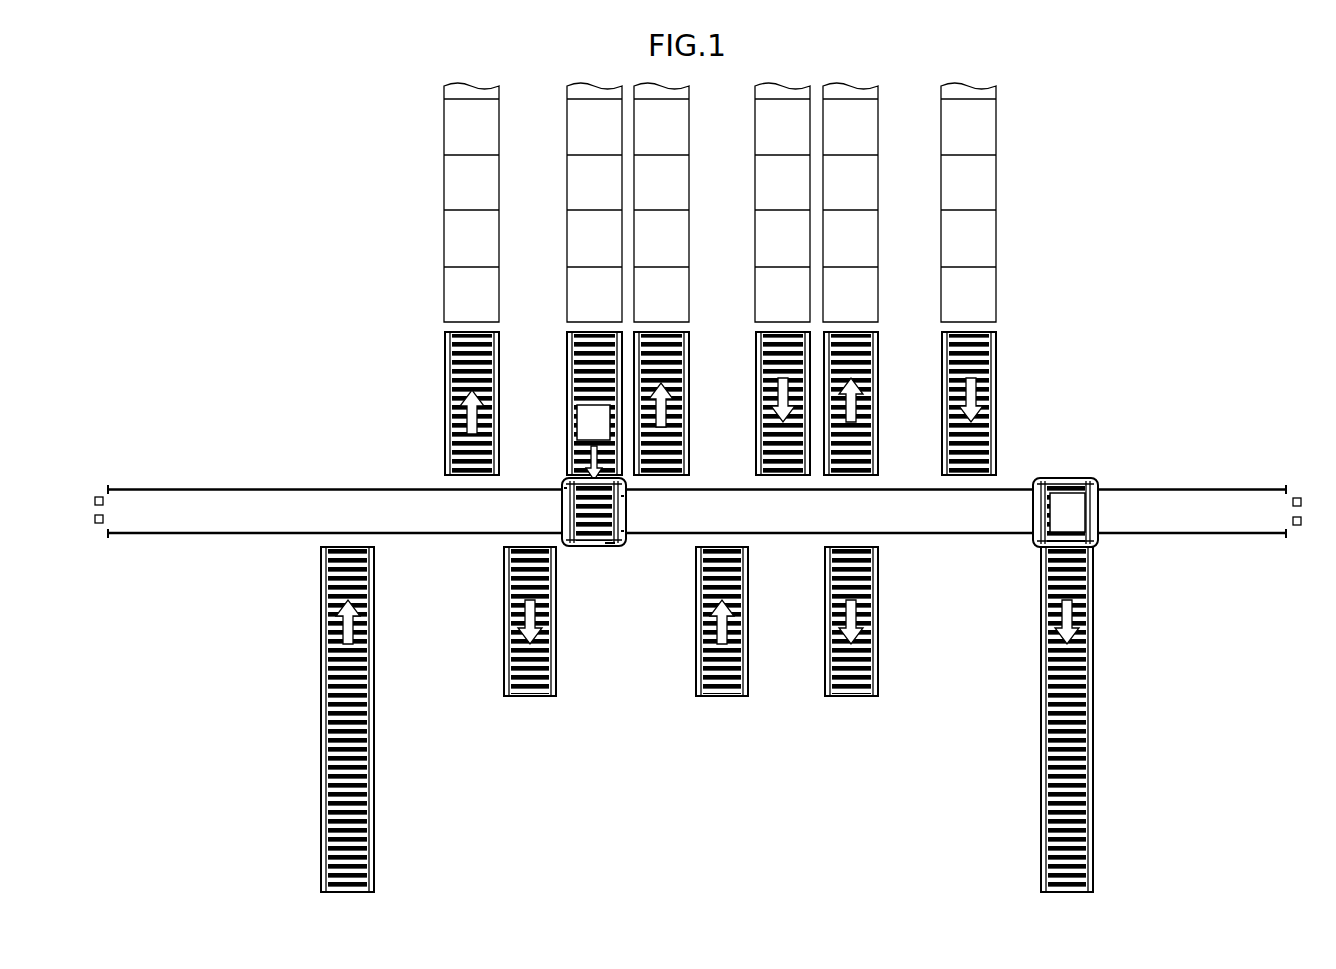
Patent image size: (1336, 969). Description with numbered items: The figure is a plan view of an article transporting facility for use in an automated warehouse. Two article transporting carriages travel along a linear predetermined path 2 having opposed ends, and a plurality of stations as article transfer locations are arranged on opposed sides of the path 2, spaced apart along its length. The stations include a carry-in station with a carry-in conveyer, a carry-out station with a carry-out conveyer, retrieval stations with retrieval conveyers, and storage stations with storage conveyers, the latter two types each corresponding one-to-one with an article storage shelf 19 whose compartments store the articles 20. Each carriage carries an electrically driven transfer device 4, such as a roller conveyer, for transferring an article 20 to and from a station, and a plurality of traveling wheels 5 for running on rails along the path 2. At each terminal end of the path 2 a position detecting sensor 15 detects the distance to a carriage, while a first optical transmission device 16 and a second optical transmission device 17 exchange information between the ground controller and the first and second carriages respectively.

The predetermined path 2 is at (206, 489).
The transfer device 4 is at (612, 548).
The traveling wheels 5 is at (563, 487).
The position detecting sensor 15 is at (98, 497).
The first optical transmission device 16 is at (99, 523).
The second optical transmission device 17 is at (1297, 525).
The article storage shelf 19 is at (440, 181).
The article 20 is at (596, 427).